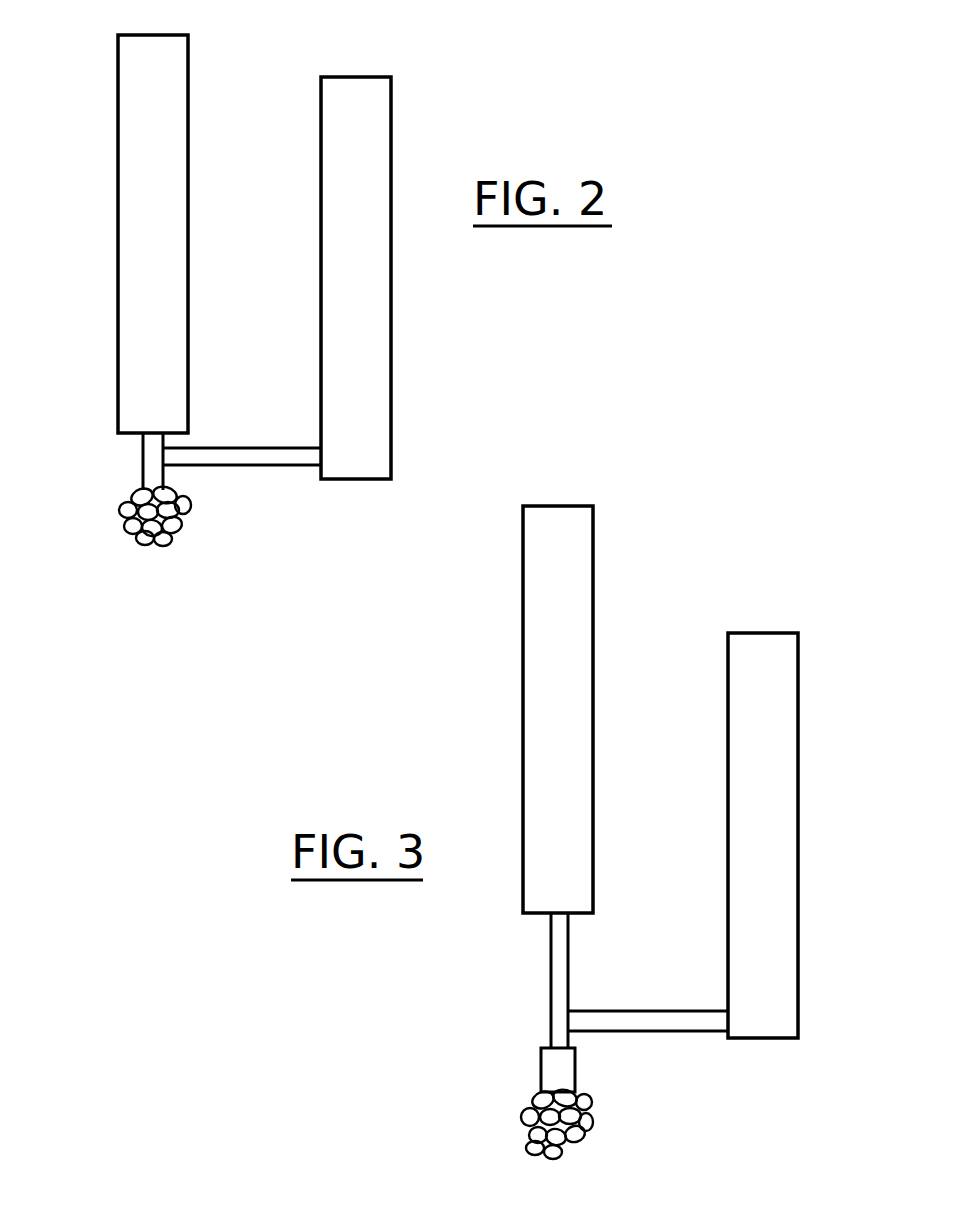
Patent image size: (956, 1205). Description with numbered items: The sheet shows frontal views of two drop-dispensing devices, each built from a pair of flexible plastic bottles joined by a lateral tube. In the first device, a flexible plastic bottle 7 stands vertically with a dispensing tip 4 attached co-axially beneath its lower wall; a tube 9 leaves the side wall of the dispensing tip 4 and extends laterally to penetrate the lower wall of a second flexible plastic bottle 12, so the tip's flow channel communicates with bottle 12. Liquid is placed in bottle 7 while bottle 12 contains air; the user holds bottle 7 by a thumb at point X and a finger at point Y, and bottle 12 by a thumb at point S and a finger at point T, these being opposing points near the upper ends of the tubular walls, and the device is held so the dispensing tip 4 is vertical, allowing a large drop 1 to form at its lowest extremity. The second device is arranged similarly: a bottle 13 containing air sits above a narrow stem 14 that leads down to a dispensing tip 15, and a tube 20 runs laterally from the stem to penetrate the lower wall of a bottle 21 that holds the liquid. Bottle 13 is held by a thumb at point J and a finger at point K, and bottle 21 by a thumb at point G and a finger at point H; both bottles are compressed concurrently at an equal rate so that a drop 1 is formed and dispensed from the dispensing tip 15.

In FIG. 2, the Lg drop 1 is at (166, 538).
In FIG. 3, the Lg drop 1 is at (575, 1145).
In FIG. 2, the dispensing tip 4 is at (143, 463).
In FIG. 2, the flexible plastic bottle 7 is at (118, 302).
In FIG. 2, the tube 9 is at (280, 466).
In FIG. 2, the flexible plastic bottle 12 is at (391, 310).
In FIG. 3, the bottle 13 is at (523, 765).
In FIG. 3, the stem of first tube 14 is at (551, 965).
In FIG. 3, the dispensing tip 15 is at (541, 1072).
In FIG. 3, the tube 20 is at (680, 1032).
In FIG. 3, the bottle 21 is at (798, 860).
In FIG. 2, the thumb holding point X is at (118, 87).
In FIG. 2, the finger holding point Y is at (188, 87).
In FIG. 2, the thumb holding point S is at (321, 144).
In FIG. 2, the finger holding point T is at (391, 148).
In FIG. 3, the thumb holding point J is at (523, 562).
In FIG. 3, the finger holding point K is at (593, 563).
In FIG. 3, the thumb holding point G is at (728, 688).
In FIG. 3, the finger holding point H is at (798, 688).